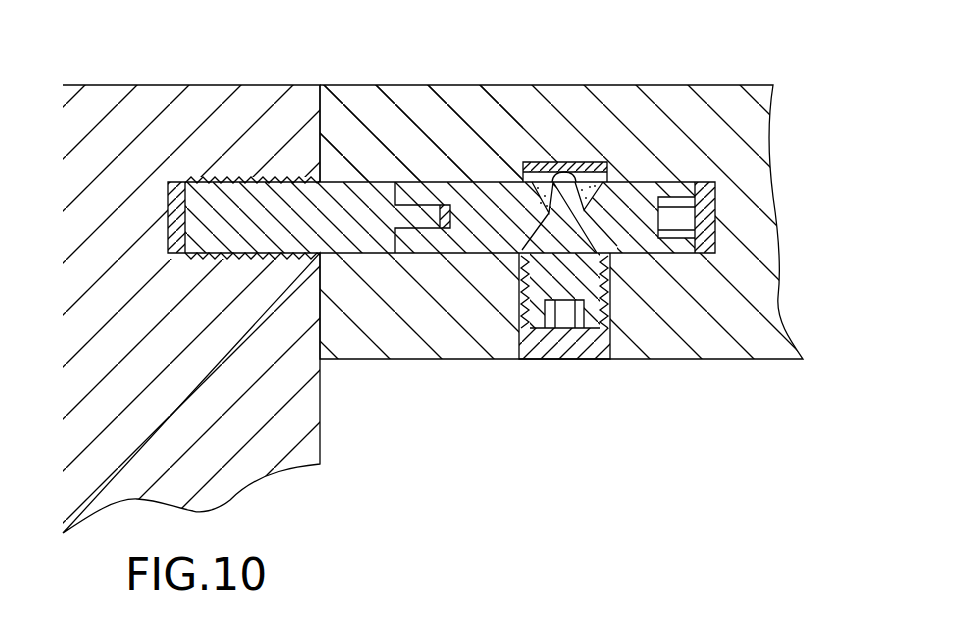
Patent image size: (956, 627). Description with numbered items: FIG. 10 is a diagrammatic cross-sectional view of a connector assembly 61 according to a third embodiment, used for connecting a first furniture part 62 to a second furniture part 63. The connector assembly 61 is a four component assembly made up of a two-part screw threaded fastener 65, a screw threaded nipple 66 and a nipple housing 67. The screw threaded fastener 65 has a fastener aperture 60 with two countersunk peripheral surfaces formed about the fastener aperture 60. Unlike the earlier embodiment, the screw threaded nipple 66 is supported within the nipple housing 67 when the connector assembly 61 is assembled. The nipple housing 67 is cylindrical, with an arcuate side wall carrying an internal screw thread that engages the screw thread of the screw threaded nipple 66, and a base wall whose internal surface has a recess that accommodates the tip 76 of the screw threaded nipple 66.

The first furniture part 62 is at (138, 103).
The second furniture part 63 is at (732, 97).
The connector assembly 61 is at (445, 135).
The screw threaded fastener 65 is at (355, 170).
The fastener aperture 60 is at (549, 213).
The tip 76 is at (570, 176).
The nipple housing 67 is at (533, 360).
The screw threaded nipple 66 is at (613, 280).